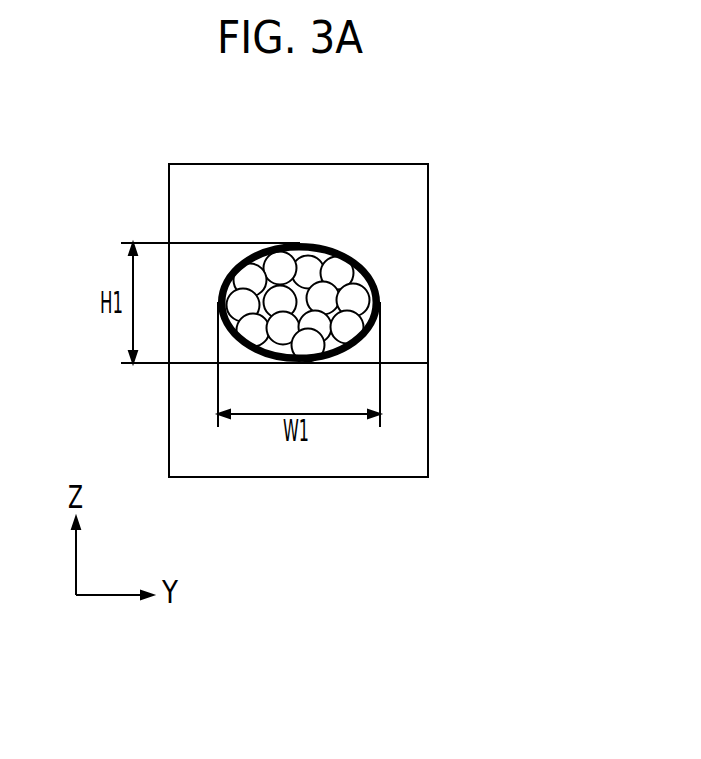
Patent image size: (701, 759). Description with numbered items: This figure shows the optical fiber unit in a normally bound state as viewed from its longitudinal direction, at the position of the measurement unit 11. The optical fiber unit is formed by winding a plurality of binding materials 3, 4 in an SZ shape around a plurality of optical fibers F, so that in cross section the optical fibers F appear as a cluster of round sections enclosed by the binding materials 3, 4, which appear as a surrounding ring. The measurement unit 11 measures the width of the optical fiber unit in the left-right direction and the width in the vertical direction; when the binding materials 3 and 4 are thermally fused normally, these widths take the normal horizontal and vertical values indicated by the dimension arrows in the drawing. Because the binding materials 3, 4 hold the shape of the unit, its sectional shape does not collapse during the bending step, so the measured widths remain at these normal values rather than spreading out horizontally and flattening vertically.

The measurement unit 11 is at (392, 164).
The binding material 3 is at (364, 227).
The binding material 4 is at (299, 227).
The optical fiber F is at (309, 259).